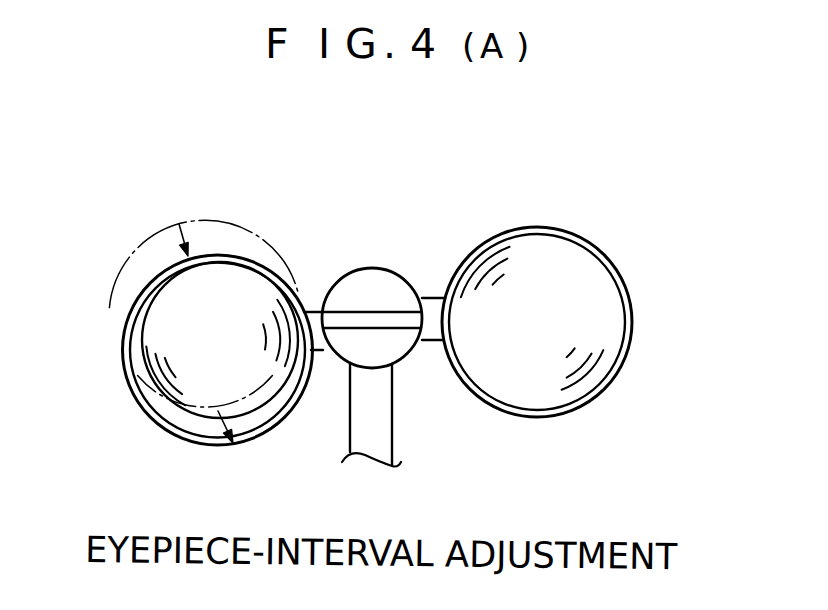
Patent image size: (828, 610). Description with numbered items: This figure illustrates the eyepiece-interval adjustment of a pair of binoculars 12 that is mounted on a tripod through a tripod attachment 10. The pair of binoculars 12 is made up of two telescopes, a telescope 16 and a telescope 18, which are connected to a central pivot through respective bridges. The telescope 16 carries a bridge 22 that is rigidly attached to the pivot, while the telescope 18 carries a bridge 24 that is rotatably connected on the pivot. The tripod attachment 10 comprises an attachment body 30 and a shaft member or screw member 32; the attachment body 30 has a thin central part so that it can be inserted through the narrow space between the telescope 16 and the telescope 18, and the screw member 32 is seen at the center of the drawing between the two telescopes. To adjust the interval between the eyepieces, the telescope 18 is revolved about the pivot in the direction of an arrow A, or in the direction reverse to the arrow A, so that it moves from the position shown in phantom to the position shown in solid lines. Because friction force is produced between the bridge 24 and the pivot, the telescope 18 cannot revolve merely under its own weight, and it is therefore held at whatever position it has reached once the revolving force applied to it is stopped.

The tripod attachment 10 is at (391, 260).
The pair of binoculars 12 is at (607, 248).
The telescope 16 is at (552, 227).
The telescope 18 is at (178, 222).
The bridge 22 is at (431, 304).
The bridge 24 is at (313, 311).
The attachment body 30 is at (387, 442).
The screw member 32 is at (360, 293).
The arrow A is at (186, 222).